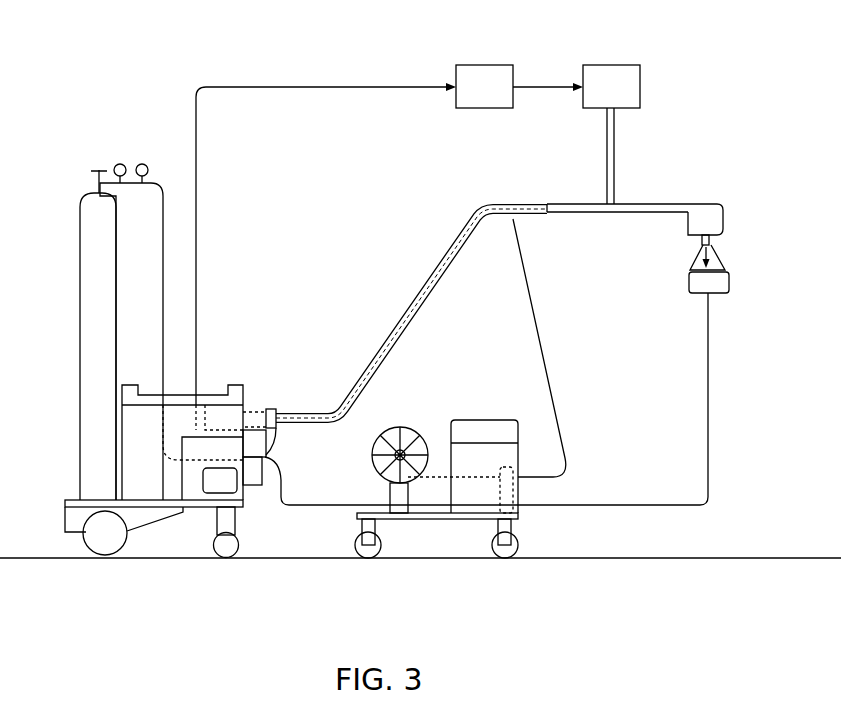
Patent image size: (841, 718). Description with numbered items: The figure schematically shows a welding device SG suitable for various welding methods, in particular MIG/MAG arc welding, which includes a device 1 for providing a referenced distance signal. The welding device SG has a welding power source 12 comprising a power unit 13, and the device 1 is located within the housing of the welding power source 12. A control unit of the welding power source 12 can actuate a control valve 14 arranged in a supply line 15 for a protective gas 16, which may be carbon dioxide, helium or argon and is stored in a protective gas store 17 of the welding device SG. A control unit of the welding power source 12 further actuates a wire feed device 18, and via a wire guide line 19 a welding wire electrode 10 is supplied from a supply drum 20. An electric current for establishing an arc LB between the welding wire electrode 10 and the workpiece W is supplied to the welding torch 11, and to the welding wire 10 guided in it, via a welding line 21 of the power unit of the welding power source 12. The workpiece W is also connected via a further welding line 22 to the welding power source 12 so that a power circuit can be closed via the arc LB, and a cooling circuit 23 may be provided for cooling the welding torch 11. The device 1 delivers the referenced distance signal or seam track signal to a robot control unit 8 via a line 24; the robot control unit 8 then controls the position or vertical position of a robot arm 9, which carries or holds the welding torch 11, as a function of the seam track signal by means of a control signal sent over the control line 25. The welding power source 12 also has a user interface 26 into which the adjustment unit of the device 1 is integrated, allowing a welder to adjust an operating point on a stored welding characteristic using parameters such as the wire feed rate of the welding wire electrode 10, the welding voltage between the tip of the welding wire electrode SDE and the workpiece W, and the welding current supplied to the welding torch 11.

The device for providing a referenced distance signal 1 is at (190, 483).
The robot control unit 8 is at (492, 100).
The robot arm 9 is at (618, 100).
The welding wire electrode 10 is at (711, 240).
The welding torch 11 is at (705, 222).
The welding power source 12 is at (217, 295).
The power unit 13 is at (215, 488).
The control valve 14 is at (250, 462).
The supply line 15 is at (493, 215).
The protective gas 16 is at (722, 262).
The protective gas store 17 is at (98, 246).
The wire feed device 18 is at (560, 536).
The wire guide line 19 is at (557, 371).
The supply drum 20 is at (404, 427).
The welding line 21 is at (452, 240).
The further welding line 22 is at (710, 413).
The cooling circuit 23 is at (368, 357).
The line 24 is at (365, 85).
The control line 25 is at (546, 90).
The user interface 26 is at (180, 403).
The welding device SG is at (128, 42).
The arc LB is at (670, 262).
The workpiece W is at (717, 285).
The tip of the welding wire electrode SDE is at (463, 480).